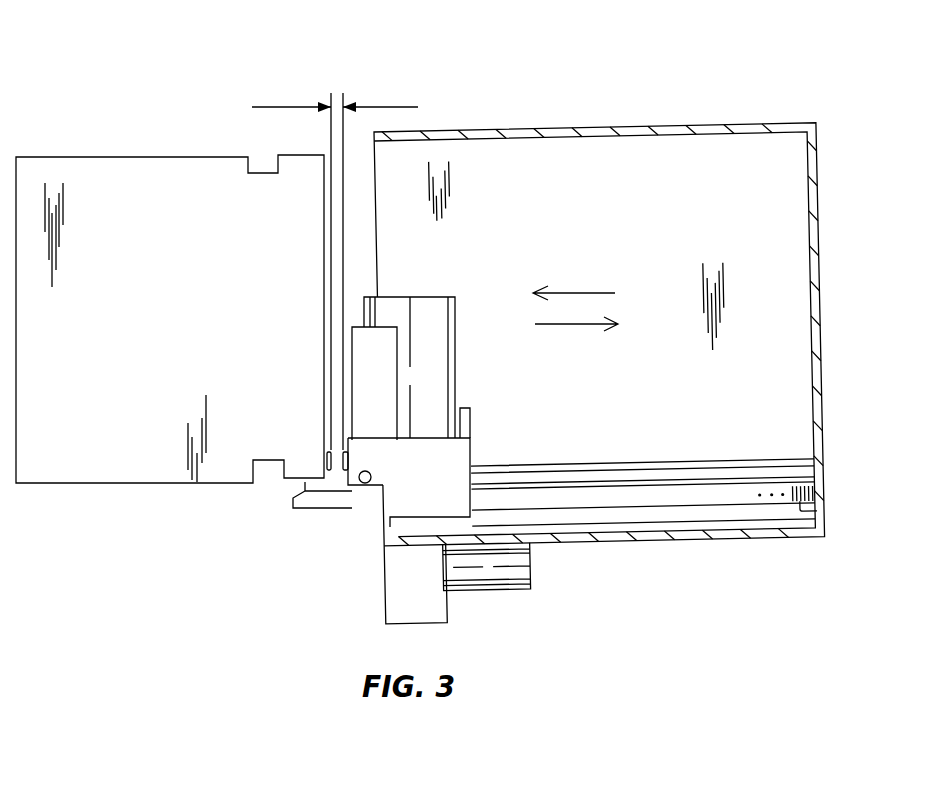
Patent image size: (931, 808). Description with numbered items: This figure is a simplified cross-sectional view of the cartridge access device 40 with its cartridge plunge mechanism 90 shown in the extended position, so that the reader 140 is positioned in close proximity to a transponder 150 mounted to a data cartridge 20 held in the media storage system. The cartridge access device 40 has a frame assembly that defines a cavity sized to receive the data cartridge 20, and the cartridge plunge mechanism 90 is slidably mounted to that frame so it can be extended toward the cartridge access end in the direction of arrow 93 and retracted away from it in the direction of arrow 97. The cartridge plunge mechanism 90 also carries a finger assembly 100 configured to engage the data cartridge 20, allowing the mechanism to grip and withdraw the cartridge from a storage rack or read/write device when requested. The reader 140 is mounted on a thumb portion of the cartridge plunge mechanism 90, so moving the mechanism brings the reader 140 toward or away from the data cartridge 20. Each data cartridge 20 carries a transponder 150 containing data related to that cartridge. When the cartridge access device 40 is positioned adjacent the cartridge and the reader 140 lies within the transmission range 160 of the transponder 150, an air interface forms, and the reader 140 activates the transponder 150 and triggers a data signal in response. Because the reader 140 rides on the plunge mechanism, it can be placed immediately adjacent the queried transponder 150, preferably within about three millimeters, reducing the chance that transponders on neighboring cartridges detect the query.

The data cartridge 20 is at (164, 150).
The cartridge access device 40 is at (838, 172).
The cartridge plunge mechanism 90 is at (418, 292).
The arrow 93 is at (597, 292).
The arrow 97 is at (555, 325).
The finger assembly 100 is at (293, 504).
The reader 140 is at (363, 487).
The transponder 150 is at (342, 485).
The transmission range 160 is at (340, 84).